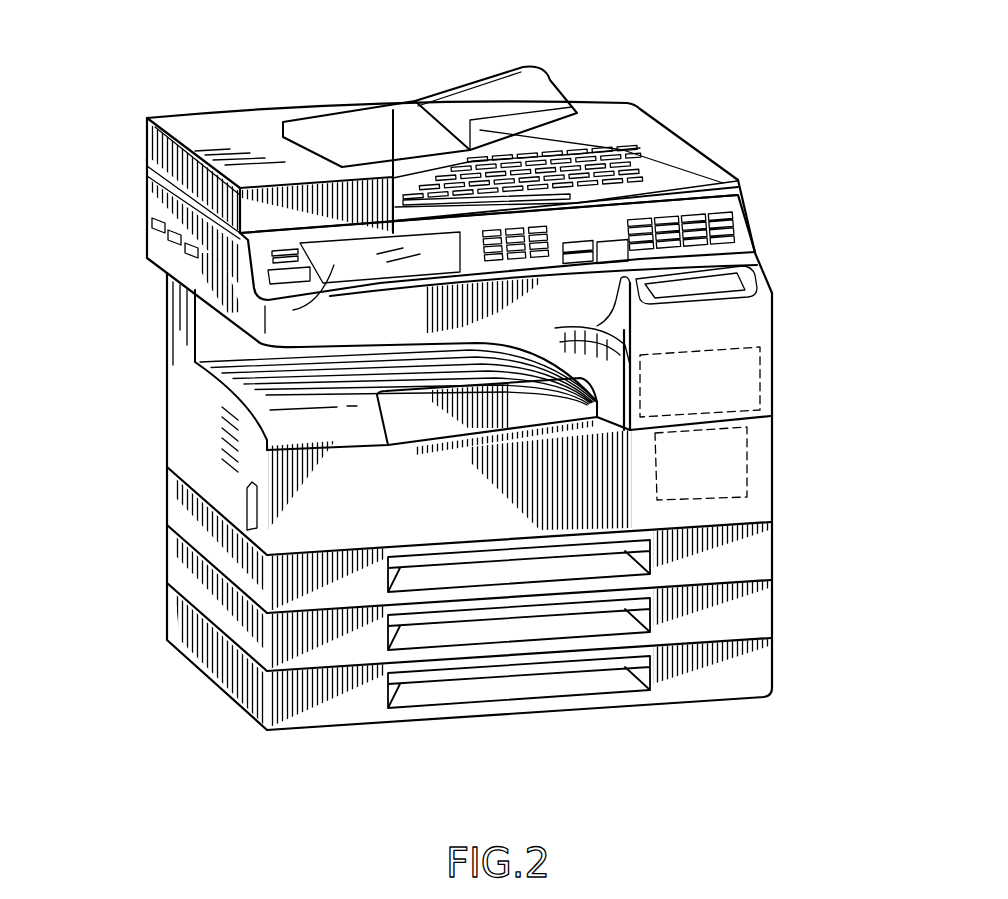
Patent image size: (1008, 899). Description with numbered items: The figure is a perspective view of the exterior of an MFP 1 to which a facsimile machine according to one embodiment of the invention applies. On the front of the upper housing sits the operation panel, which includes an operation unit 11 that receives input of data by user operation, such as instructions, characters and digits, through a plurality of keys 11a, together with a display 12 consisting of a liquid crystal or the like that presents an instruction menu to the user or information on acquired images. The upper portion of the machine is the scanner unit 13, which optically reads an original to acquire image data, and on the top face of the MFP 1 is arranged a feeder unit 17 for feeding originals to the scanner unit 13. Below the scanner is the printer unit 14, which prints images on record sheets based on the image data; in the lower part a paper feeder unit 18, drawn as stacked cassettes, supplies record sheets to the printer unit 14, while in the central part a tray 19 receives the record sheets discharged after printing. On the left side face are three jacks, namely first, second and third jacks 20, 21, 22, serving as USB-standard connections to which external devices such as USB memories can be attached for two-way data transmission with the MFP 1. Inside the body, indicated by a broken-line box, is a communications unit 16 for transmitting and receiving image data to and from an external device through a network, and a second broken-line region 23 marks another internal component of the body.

The MFP 1 is at (147, 37).
The operation unit 11 is at (601, 233).
The keys 11a is at (547, 268).
The display 12 is at (300, 305).
The scanner unit 13 is at (137, 139).
The printer unit 14 is at (784, 420).
The communications unit 16 is at (750, 478).
The feeder unit 17 is at (342, 128).
The paper feeder unit 18 is at (183, 502).
The tray 19 is at (265, 374).
The first jack 20 is at (152, 224).
The second jack 21 is at (170, 239).
The third jack 22 is at (187, 253).
The storage unit 23 is at (762, 378).